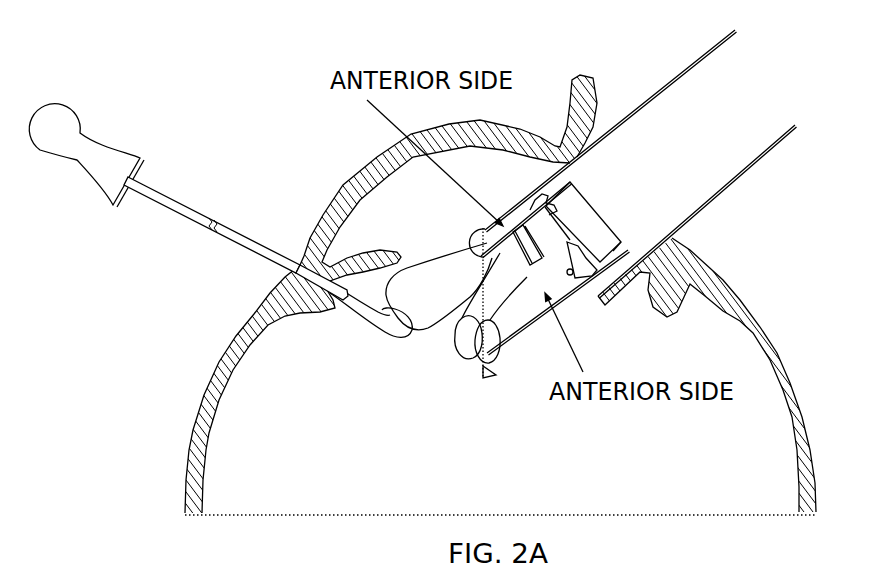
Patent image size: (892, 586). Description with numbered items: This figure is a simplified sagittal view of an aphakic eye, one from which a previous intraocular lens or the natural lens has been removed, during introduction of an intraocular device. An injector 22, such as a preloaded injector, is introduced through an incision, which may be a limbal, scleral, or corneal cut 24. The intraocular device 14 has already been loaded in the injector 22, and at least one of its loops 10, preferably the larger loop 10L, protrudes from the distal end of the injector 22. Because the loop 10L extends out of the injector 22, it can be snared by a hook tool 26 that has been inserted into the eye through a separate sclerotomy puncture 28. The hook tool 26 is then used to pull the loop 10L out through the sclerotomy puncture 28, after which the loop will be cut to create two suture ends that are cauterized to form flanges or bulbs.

The loops 10 is at (480, 353).
The larger loop 10L is at (437, 263).
The intraocular device 14 is at (580, 210).
The injector 22 is at (667, 86).
The cut 24 is at (672, 230).
The hook tool 26 is at (162, 198).
The sclerotomy puncture 28 is at (292, 260).